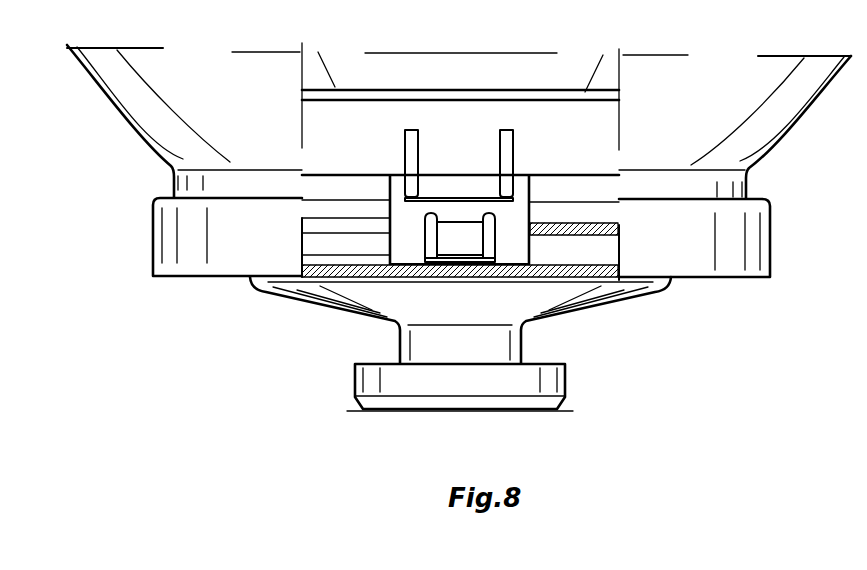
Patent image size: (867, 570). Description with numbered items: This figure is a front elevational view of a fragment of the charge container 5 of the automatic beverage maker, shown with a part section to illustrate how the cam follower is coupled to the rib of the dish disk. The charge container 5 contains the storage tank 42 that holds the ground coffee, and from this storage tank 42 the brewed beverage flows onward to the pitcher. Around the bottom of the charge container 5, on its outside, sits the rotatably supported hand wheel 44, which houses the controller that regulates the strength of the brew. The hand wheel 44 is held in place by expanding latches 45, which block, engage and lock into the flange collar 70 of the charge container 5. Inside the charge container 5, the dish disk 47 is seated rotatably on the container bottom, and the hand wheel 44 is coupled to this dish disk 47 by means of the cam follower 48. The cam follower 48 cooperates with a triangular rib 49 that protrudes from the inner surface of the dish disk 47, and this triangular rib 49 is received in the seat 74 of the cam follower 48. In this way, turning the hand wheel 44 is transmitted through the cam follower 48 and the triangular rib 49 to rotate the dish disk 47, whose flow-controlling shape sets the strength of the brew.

The charge container 5 is at (180, 75).
The storage tank 42 is at (568, 69).
The dish disk 47 is at (577, 98).
The hand wheel 44 is at (252, 246).
The cam follower 48 is at (408, 227).
The triangular rib 49 is at (412, 155).
The seat 74 is at (478, 193).
The expanding latches 45 is at (462, 230).
The flange collar 70 is at (468, 261).